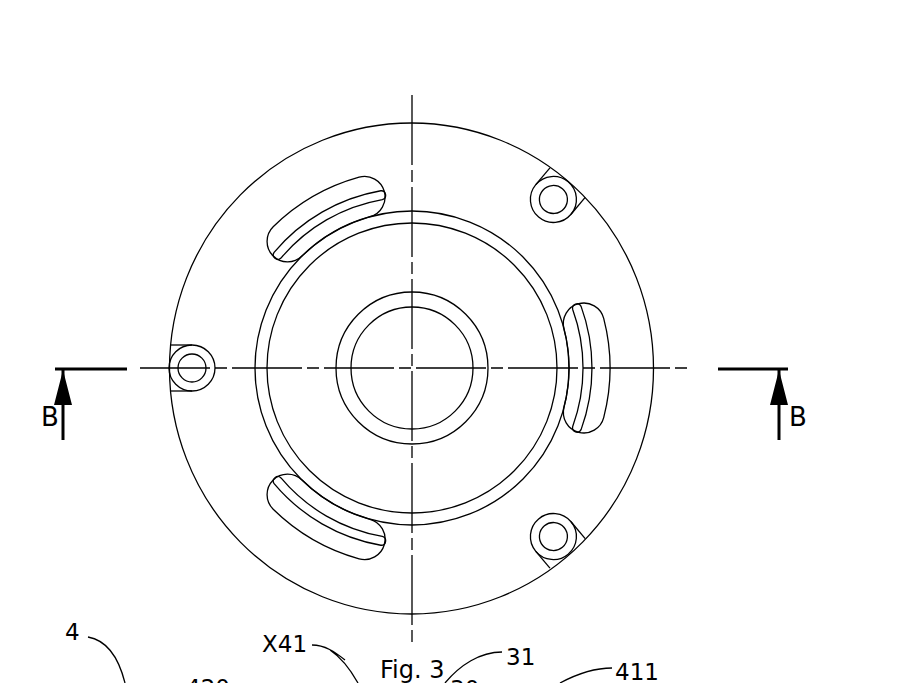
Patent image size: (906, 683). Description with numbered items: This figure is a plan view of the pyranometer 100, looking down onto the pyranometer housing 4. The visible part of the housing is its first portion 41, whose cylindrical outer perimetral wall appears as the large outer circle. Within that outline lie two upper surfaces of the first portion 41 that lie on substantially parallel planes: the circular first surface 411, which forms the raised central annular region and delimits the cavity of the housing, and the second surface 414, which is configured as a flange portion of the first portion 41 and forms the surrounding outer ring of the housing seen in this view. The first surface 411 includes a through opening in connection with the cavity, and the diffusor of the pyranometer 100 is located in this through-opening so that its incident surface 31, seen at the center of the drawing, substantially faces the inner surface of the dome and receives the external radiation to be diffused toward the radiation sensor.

The pyranometer 100 is at (667, 115).
The pyranometer housing 4 is at (129, 151).
The first portion 41 is at (139, 323).
The second surface 414 is at (625, 325).
The first surface 411 is at (490, 447).
The incident surface 31 is at (387, 347).